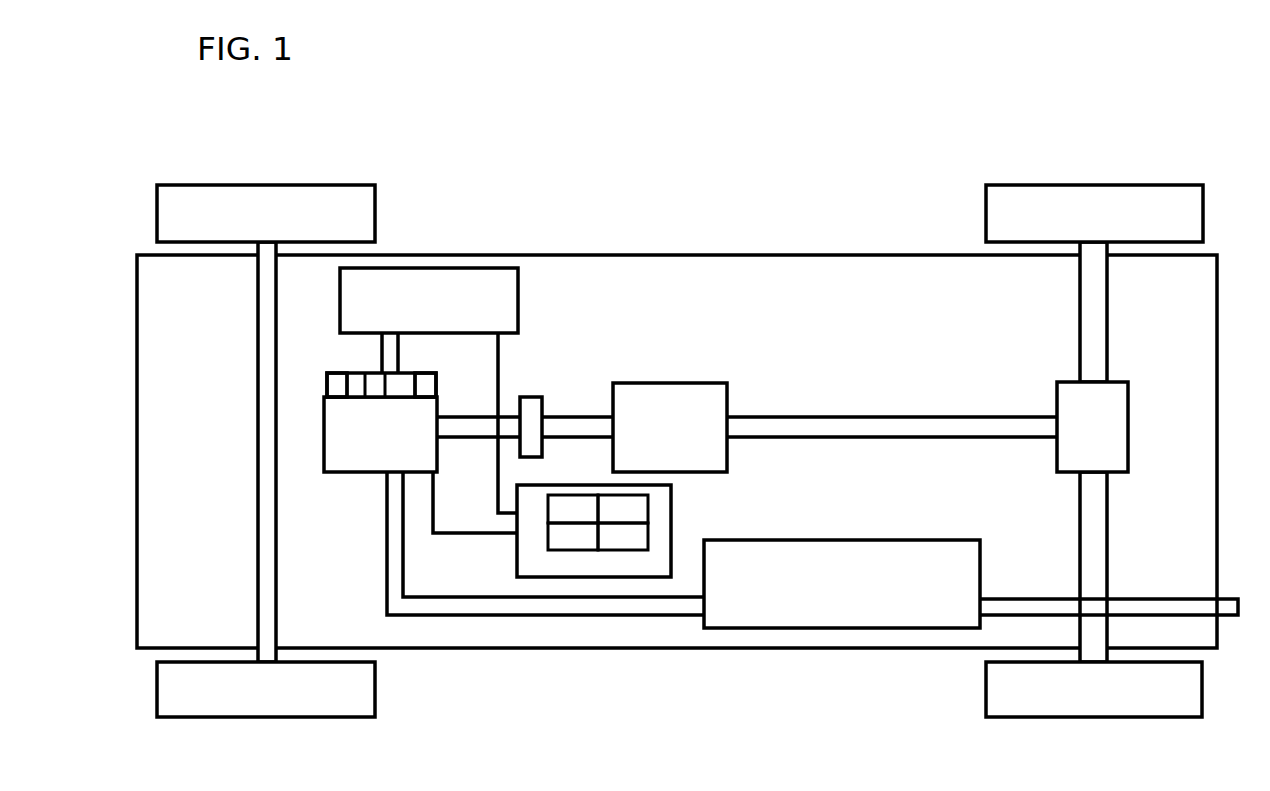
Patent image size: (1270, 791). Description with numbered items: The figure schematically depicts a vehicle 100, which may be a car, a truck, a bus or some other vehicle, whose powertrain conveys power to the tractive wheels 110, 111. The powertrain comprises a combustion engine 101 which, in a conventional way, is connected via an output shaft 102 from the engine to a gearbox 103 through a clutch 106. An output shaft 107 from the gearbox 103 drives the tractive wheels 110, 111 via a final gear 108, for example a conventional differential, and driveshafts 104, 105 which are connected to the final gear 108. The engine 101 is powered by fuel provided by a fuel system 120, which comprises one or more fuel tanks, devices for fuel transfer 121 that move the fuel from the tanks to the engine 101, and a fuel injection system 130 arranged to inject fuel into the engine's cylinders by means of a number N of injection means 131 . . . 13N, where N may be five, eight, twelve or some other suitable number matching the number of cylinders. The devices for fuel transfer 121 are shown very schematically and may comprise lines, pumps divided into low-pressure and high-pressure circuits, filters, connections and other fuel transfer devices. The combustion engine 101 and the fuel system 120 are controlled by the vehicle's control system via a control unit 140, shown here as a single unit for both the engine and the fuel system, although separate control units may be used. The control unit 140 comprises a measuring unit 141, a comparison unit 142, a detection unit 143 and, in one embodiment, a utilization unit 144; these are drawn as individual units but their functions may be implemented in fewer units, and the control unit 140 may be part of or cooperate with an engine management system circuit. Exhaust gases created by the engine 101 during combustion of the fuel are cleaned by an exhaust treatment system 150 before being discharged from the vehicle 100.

The vehicle 100 is at (586, 96).
The combustion engine 101 is at (350, 475).
The output shaft 102 is at (457, 417).
The gearbox 103 is at (671, 394).
The driveshaft 104 is at (1100, 307).
The driveshaft 105 is at (1100, 574).
The clutch 106 is at (533, 400).
The output shaft 107 is at (834, 425).
The final gear 108 is at (1120, 421).
The tractive wheel 110 is at (1200, 205).
The tractive wheel 111 is at (1200, 692).
The fuel system 120 is at (498, 315).
The devices for fuel transfer 121 is at (390, 351).
The fuel injection system 130 is at (326, 380).
The injection means 131 is at (335, 397).
The injection means 13N is at (426, 397).
The control unit 140 is at (555, 538).
The measuring unit 141 is at (573, 510).
The comparison unit 142 is at (573, 537).
The detection unit 143 is at (623, 510).
The utilization unit 144 is at (623, 537).
The exhaust treatment system 150 is at (860, 630).